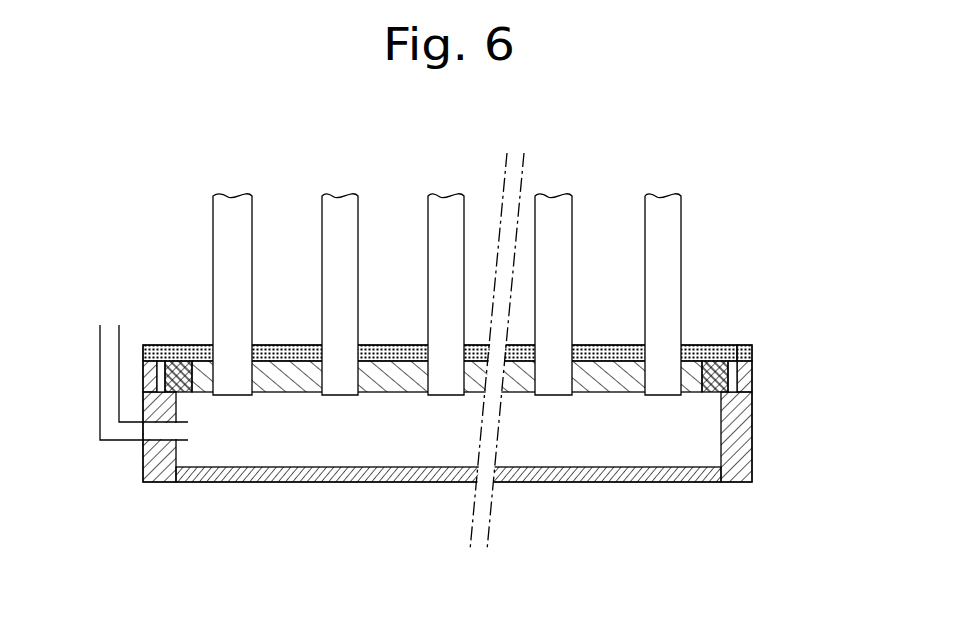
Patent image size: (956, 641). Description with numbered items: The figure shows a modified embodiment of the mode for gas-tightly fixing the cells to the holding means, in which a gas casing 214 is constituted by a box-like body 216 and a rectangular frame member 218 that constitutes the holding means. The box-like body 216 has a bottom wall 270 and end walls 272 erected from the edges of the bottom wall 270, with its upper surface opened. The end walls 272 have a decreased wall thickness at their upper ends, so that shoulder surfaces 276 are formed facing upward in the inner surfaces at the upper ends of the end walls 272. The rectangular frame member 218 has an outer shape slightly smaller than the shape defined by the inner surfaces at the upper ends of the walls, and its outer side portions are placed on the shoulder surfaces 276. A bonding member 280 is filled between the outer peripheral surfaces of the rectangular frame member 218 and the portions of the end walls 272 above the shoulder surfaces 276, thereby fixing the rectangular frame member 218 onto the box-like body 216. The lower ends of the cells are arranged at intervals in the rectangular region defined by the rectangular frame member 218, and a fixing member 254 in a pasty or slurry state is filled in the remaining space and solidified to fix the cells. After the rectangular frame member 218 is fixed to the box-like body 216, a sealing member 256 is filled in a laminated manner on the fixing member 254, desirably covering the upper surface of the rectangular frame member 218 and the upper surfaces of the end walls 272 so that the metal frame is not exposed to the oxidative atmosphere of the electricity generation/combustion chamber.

The gas casing 214 is at (598, 516).
The box-like body 216 is at (760, 408).
The rectangular frame member 218 is at (700, 398).
The fixing member 254 is at (385, 392).
The sealing member 256 is at (282, 345).
The bottom wall 270 is at (327, 482).
The end walls 272 is at (143, 462).
The shoulder surfaces 276 is at (157, 345).
The bonding member 280 is at (753, 375).